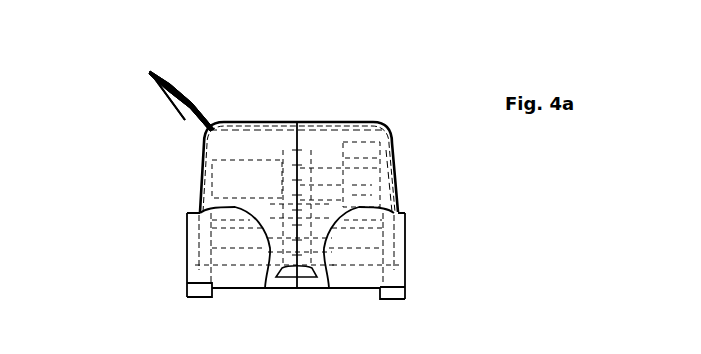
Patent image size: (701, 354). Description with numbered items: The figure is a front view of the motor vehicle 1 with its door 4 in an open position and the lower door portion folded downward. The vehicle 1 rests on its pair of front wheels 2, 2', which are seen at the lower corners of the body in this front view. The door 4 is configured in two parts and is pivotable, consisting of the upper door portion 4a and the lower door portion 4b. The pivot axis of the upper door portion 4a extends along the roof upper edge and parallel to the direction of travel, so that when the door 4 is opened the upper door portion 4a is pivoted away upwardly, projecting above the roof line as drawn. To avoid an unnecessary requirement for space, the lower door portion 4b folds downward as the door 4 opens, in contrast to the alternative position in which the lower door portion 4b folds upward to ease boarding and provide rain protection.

The motor vehicle 1 is at (404, 112).
The front wheel 2 is at (173, 298).
The front wheel 2' is at (428, 310).
The door 4 is at (182, 79).
The upper door portion 4a is at (192, 101).
The lower door portion 4b is at (178, 106).